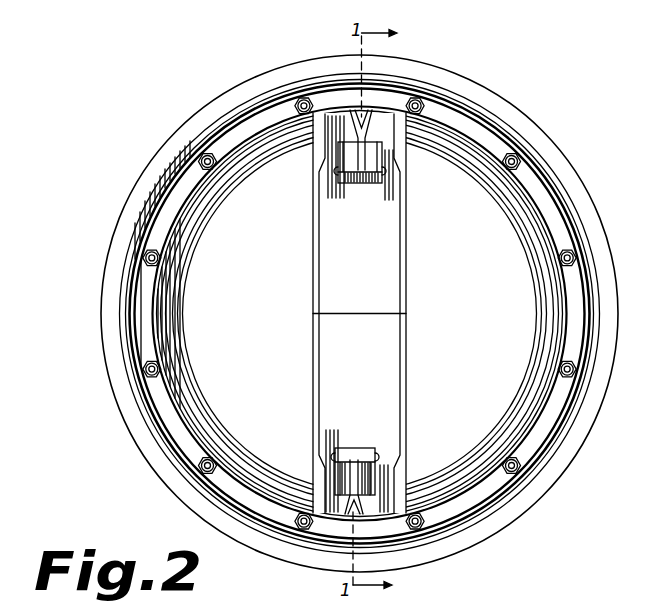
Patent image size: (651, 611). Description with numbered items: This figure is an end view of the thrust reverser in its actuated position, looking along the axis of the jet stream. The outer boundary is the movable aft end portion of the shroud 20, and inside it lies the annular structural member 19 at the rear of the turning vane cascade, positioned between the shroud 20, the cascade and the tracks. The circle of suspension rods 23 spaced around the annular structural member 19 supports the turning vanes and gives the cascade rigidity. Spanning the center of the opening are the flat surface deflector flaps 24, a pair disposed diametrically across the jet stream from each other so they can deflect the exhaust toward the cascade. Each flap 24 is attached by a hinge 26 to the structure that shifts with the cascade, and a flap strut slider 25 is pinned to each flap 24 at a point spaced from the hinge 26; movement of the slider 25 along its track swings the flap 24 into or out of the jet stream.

The shroud 20 is at (483, 103).
The annular structural member 19 is at (233, 491).
The suspension rods 23 is at (208, 463).
The deflector flaps 24 is at (369, 266).
The flap strut slider 25 is at (355, 482).
The hinge 26 is at (378, 462).